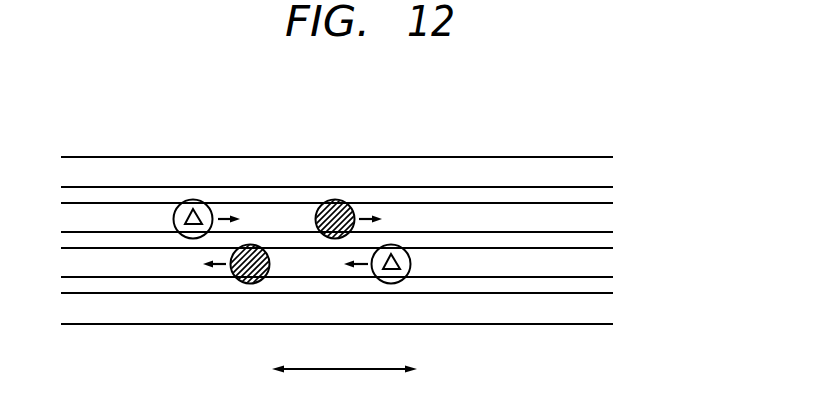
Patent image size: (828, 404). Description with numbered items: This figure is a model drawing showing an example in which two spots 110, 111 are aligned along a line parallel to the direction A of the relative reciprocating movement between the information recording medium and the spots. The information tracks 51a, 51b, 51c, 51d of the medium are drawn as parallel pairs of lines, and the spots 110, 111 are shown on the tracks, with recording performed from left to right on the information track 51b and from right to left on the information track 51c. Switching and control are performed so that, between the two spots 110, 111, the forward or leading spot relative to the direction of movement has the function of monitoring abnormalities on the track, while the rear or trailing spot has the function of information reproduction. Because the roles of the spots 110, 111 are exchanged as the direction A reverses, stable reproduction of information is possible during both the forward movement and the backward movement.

The information track 51a is at (605, 177).
The information track 51b is at (603, 220).
The information track 51c is at (603, 267).
The information track 51d is at (603, 312).
The spot 110 is at (250, 245).
The spot 111 is at (391, 245).
The direction of relative reciprocating movement A is at (344, 357).